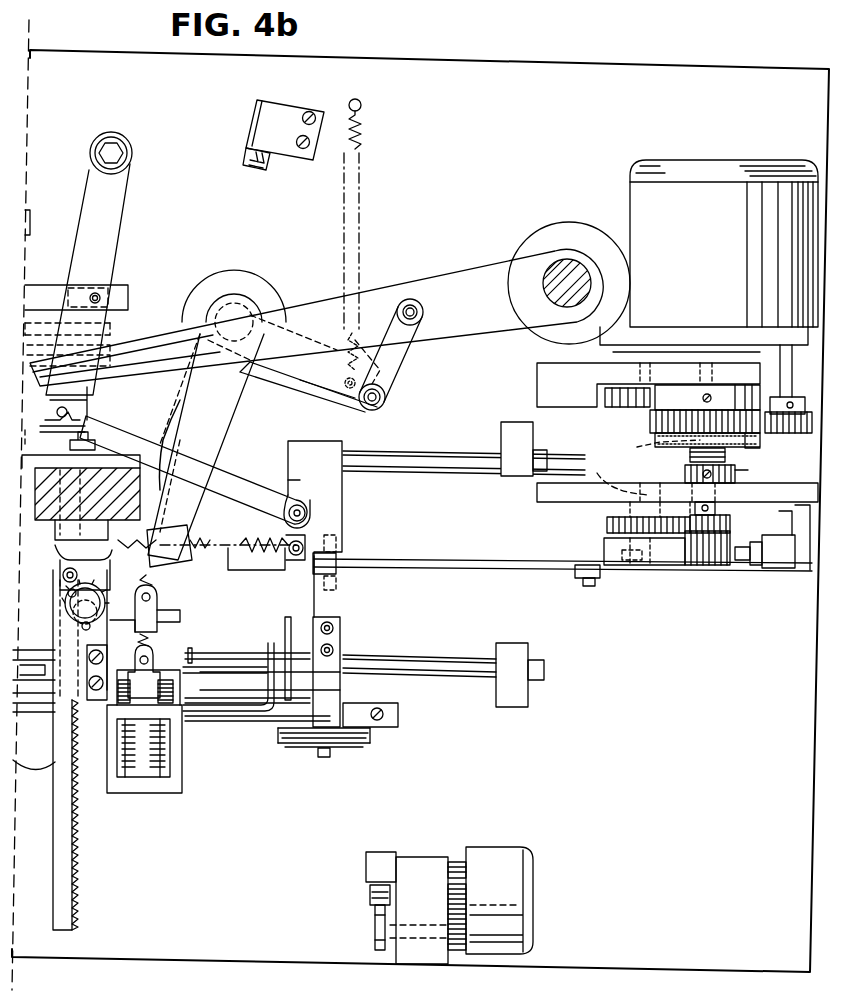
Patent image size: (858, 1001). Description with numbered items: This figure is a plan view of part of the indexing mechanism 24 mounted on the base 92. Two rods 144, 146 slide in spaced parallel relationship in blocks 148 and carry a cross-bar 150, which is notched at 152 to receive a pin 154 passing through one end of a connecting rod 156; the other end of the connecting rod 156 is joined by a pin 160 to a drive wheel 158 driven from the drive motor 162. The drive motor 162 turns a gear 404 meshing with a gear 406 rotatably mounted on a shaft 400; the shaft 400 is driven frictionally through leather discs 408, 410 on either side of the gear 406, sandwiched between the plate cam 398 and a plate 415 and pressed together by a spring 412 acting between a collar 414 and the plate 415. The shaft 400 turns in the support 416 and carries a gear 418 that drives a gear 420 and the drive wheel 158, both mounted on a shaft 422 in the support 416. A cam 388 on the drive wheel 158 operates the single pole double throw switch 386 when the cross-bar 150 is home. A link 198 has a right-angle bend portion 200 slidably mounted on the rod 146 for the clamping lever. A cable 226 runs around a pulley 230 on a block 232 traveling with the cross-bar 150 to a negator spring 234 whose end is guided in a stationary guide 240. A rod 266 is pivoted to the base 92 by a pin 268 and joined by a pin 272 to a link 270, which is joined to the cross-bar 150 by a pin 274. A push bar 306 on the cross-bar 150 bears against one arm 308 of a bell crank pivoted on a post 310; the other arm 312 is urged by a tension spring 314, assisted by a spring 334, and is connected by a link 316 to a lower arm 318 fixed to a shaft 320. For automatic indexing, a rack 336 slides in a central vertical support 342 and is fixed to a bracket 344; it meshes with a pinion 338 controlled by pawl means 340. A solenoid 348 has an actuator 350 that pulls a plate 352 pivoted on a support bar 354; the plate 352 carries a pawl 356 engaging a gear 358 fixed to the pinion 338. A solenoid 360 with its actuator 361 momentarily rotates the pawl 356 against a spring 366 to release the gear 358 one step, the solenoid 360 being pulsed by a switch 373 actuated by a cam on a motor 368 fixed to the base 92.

The indexing mechanism 24 is at (428, 138).
The base 92 is at (790, 82).
The rod 144 is at (410, 450).
The rod 146 is at (432, 658).
The blocks 148 is at (502, 437).
The cross-bar 150 is at (336, 500).
The notch 152 is at (318, 545).
The pin 154 is at (342, 575).
The connecting rod 156 is at (425, 558).
The drive wheel 158 is at (658, 565).
The pin 160 is at (583, 586).
The drive motor 162 is at (712, 180).
The link 198 is at (228, 712).
The right-angle bend portion 200 is at (282, 635).
The cable 226 is at (250, 665).
The pulley 230 is at (350, 746).
The block 232 is at (330, 676).
The negator spring 234 is at (45, 770).
The stationary guide 240 is at (388, 727).
The rod 266 is at (124, 196).
The pin 268 is at (112, 142).
The link 270 is at (95, 432).
The pin 272 is at (82, 420).
The pin 274 is at (298, 478).
The push bar 306 is at (236, 555).
The arm 308 is at (243, 375).
The post 310 is at (236, 305).
The arm 312 is at (332, 382).
The tension spring 314 is at (368, 150).
The link 316 is at (392, 338).
The lower arm 318 is at (487, 282).
The shaft 320 is at (578, 262).
The spring 334 is at (280, 548).
The rack 336 is at (68, 848).
The pinion 338 is at (68, 608).
The pawl means 340 is at (172, 629).
The central vertical support 342 is at (178, 425).
The bracket 344 is at (38, 415).
The solenoid 348 is at (184, 698).
The actuator 350 is at (156, 590).
The plate 352 is at (170, 536).
The support bar 354 is at (66, 590).
The pawl 356 is at (175, 460).
The gear 358 is at (80, 628).
The solenoid 360 is at (134, 786).
The actuator 361 is at (176, 692).
The spring 366 is at (72, 548).
The electric motor 368 is at (507, 862).
The switch 373 is at (376, 865).
The single pole double throw switch 386 is at (778, 568).
The cam 388 is at (732, 565).
The plate cam 398 is at (688, 400).
The shaft 400 is at (648, 451).
The gear 404 is at (772, 433).
The gear 406 is at (650, 418).
The leather disc 408 is at (768, 375).
The leather disc 410 is at (760, 447).
The spring 412 is at (738, 460).
The collar 414 is at (685, 474).
The plate 415 is at (657, 440).
The support 416 is at (540, 492).
The gear 418 is at (730, 528).
The gear 420 is at (610, 530).
The shaft 422 is at (604, 480).